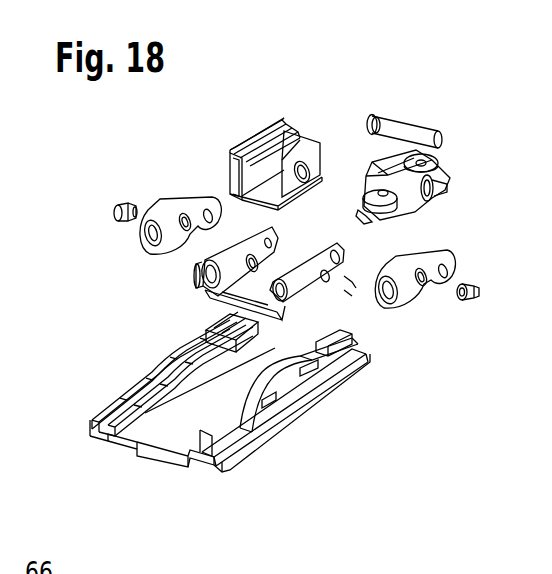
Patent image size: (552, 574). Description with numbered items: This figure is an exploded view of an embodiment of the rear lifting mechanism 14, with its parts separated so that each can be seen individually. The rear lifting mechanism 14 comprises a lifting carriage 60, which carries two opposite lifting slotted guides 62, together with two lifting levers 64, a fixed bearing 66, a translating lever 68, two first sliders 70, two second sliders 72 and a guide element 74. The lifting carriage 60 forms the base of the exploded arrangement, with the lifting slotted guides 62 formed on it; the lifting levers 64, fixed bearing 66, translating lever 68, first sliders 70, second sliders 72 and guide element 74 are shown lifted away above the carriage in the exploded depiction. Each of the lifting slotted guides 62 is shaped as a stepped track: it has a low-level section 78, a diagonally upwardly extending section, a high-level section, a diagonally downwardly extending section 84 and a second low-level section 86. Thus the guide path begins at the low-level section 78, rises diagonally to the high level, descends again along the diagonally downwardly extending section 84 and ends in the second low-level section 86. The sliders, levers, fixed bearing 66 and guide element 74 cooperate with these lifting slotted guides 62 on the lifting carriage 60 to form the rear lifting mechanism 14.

The rear lifting mechanism 14 is at (333, 113).
The lifting carriage 60 is at (230, 444).
The lifting slotted guides 62 is at (172, 358).
The lifting levers 64 is at (186, 212).
The fixed bearing 66 is at (452, 156).
The translating lever 68 is at (352, 294).
The first sliders 70 is at (198, 270).
The second sliders 72 is at (352, 280).
The guide element 74 is at (268, 142).
The low-level section 78 is at (132, 396).
The diagonally downwardly extending section 84 is at (206, 338).
The second low-level section 86 is at (260, 344).